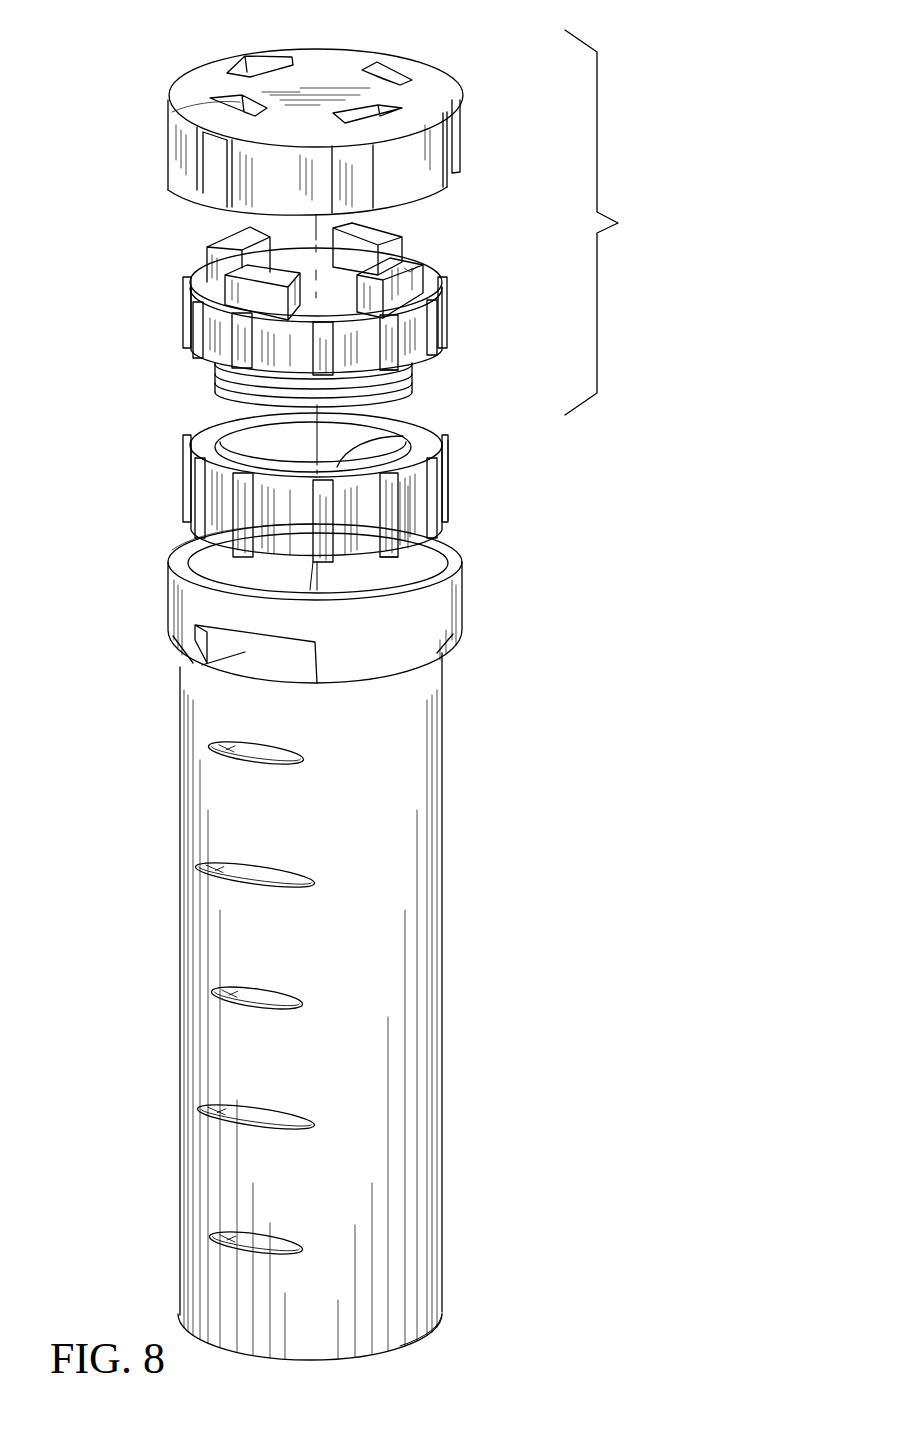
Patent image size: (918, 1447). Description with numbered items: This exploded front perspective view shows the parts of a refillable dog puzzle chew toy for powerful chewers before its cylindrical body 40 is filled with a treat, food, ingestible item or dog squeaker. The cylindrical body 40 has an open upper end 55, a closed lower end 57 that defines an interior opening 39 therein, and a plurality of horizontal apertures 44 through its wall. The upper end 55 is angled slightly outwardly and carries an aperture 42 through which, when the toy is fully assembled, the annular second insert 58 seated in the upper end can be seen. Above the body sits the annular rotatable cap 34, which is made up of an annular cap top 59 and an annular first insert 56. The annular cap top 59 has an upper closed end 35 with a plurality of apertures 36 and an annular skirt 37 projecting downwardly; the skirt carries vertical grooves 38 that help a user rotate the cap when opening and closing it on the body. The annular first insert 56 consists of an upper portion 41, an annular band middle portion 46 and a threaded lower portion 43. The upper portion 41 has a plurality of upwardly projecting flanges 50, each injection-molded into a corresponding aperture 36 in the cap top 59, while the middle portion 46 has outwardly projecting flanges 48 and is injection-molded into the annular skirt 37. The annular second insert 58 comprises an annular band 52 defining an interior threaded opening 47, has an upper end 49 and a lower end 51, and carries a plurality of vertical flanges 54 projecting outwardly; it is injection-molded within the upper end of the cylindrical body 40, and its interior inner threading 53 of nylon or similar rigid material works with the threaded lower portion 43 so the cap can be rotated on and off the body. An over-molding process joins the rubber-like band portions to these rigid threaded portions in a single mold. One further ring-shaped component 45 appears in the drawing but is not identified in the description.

The annular rotatable cap 34 is at (608, 222).
The upper closed end 35 is at (322, 50).
The apertures 36 is at (243, 64).
The annular skirt 37 is at (447, 158).
The vertical grooves 38 is at (357, 180).
The interior opening 39 is at (370, 575).
The cylindrical body 40 is at (177, 592).
The upper portion 41 is at (200, 280).
The aperture 42 is at (245, 650).
The threaded lower portion 43 is at (225, 385).
The apertures 44 is at (210, 750).
The lower ring 45 is at (178, 483).
The annular band middle portion 46 is at (420, 335).
The interior threaded opening 47 is at (337, 467).
The flanges 48 is at (390, 357).
The upper end 49 is at (443, 455).
The flanges 50 is at (395, 268).
The lower end 51 is at (182, 522).
The annular band 52 is at (450, 482).
The interior inner threading 53 is at (237, 443).
The vertical flanges 54 is at (400, 527).
The open upper end 55 is at (168, 555).
The annular first insert 56 is at (185, 285).
The closed lower end 57 is at (442, 1313).
The annular second insert 58 is at (413, 508).
The annular cap top 59 is at (200, 115).